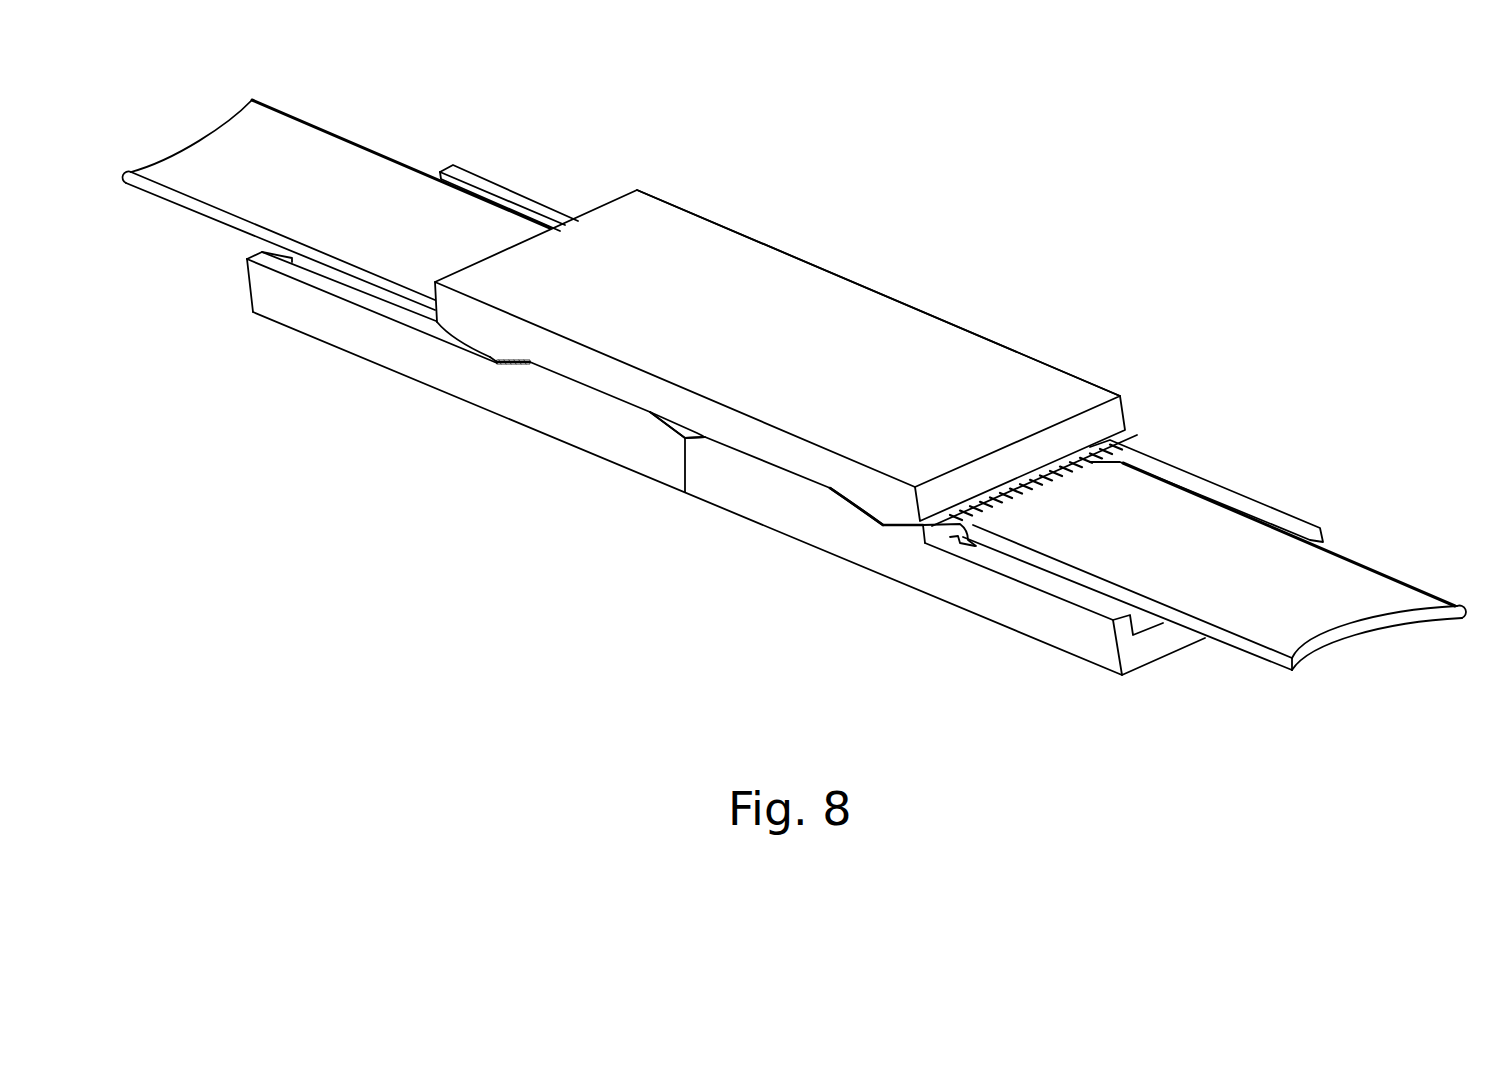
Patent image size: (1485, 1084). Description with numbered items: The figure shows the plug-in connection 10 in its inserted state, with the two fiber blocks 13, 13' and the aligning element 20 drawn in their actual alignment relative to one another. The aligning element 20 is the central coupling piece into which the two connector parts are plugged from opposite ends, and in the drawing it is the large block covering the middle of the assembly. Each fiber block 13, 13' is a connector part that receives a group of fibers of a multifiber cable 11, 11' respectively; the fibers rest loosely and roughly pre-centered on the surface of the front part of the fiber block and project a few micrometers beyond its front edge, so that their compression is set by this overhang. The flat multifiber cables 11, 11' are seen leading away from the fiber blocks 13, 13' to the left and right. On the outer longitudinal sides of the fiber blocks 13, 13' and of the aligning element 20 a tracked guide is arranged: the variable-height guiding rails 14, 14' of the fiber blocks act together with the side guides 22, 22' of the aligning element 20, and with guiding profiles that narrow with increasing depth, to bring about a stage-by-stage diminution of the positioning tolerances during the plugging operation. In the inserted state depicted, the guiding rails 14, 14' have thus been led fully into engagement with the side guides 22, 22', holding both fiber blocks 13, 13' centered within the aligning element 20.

The plug-in connection 10 is at (984, 214).
The aligning element 20 is at (746, 351).
The side guide 22 is at (903, 594).
The side guide 22' is at (435, 414).
The guiding rail 14 is at (700, 531).
The guiding rail 14' is at (684, 467).
The fiber block 13 is at (1123, 616).
The fiber block 13' is at (412, 308).
The multifiber cable 11 is at (1214, 601).
The multifiber cable 11' is at (336, 184).